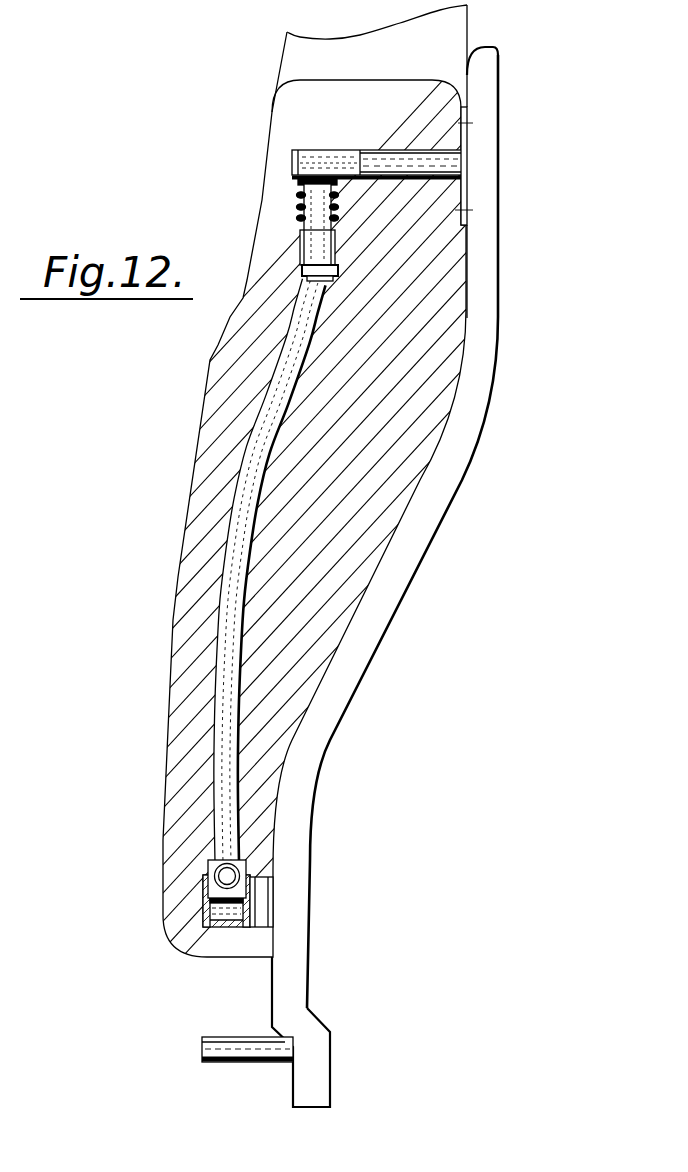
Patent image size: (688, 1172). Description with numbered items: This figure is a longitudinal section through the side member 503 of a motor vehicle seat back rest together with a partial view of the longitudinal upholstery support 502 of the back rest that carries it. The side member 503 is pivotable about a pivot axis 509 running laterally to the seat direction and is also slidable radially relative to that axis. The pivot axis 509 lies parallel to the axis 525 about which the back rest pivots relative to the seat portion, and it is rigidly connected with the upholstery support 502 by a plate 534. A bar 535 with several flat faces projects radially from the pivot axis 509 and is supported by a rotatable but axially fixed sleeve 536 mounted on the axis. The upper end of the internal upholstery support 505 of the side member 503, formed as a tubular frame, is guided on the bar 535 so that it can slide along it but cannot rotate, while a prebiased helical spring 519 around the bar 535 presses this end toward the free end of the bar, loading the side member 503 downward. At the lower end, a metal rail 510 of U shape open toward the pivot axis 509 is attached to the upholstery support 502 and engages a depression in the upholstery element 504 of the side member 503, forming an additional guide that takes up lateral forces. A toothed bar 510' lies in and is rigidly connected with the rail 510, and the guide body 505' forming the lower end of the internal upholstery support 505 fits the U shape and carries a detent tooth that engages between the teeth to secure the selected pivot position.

The longitudinal upholstery support 502 is at (475, 399).
The side member 503 is at (187, 512).
The upholstery element 504 is at (222, 392).
The internal upholstery support 505 is at (217, 571).
The guide body 505' is at (169, 857).
The pivot axis 509 is at (455, 157).
The rail 510 is at (313, 899).
The toothed bar 510' is at (213, 941).
The helical spring 519 is at (300, 193).
The axis 525 is at (202, 1052).
The plate 534 is at (465, 197).
The bar 535 is at (314, 237).
The sleeve 536 is at (332, 157).